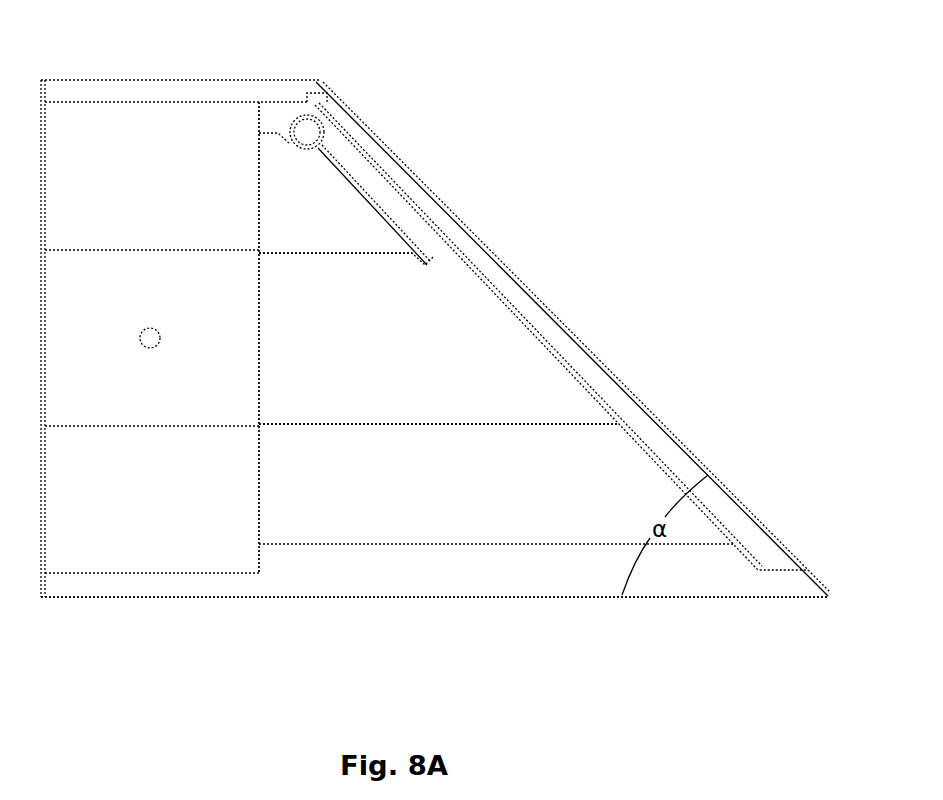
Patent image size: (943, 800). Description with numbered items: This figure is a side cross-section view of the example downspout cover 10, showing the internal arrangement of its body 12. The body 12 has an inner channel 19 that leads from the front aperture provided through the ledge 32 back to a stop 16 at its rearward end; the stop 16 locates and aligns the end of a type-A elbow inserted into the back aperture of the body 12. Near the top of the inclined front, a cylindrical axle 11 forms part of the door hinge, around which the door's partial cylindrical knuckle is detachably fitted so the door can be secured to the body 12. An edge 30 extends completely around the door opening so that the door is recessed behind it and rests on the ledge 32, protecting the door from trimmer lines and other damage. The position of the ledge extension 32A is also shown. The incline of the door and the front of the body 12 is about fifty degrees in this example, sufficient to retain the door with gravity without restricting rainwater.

The downspout cover 10 is at (648, 207).
The cylindrical axle 11 is at (303, 130).
The body 12 is at (125, 77).
The stop 16 is at (257, 478).
The channel 19 is at (368, 346).
The edge 30 is at (373, 130).
The ledge 32 is at (681, 599).
The ledge extension 32A is at (350, 187).